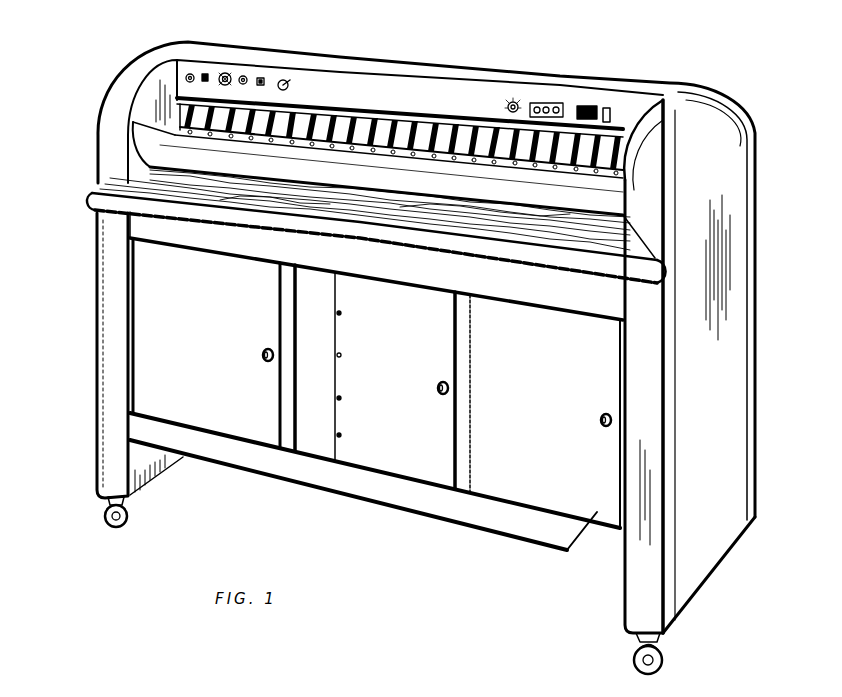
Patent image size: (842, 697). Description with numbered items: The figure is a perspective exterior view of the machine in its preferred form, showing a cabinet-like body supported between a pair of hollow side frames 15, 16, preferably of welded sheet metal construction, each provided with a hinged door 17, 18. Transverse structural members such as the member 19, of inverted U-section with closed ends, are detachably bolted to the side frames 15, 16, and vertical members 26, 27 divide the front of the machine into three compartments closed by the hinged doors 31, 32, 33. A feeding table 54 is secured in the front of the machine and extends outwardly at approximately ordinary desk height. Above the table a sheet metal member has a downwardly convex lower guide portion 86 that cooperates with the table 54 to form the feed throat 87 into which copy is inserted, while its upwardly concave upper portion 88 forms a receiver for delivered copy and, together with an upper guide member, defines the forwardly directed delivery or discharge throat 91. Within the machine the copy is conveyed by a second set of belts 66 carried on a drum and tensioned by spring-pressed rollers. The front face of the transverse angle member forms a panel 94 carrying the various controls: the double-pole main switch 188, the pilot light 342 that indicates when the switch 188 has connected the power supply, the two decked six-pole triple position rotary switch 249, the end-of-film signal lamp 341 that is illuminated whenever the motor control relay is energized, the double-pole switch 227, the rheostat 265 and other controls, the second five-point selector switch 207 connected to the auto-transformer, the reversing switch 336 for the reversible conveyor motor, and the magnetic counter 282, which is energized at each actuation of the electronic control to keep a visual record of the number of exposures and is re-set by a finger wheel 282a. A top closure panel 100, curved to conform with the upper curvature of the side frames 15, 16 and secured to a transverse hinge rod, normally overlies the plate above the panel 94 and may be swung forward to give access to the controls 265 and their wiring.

The top closure panel 100 is at (660, 83).
The delivery or discharge throat 91 is at (178, 98).
The panel 94 is at (493, 100).
The second pilot light 342 is at (187, 76).
The double-pole switch 188 is at (208, 76).
The two decked six-pole triple position rotary switch 249 is at (228, 76).
The pilot or end-of-film signal lamp 341 is at (246, 81).
The double-pole switch 227 is at (263, 80).
The rheostat 265 is at (286, 86).
The second set of belts 66 is at (428, 123).
The upper portion of member 88 is at (177, 117).
The second five-point switch 207 is at (520, 97).
The reversing switch 336 is at (548, 103).
The magnetic counter 282 is at (592, 106).
The finger wheel 282a is at (608, 114).
The lower guide portion 86 is at (170, 148).
The feed throat 87 is at (135, 183).
The feeding table 54 is at (96, 205).
The transverse structural member 19 is at (153, 234).
The hinged door 18 is at (107, 353).
The hinged door 31 is at (143, 402).
The vertical member 26 is at (290, 440).
The hinged door 32 is at (413, 471).
The vertical member 27 is at (433, 512).
The hinged door 33 is at (573, 523).
The side frame 16 is at (107, 472).
The side frame 15 is at (633, 595).
The hinged door 17 is at (703, 577).